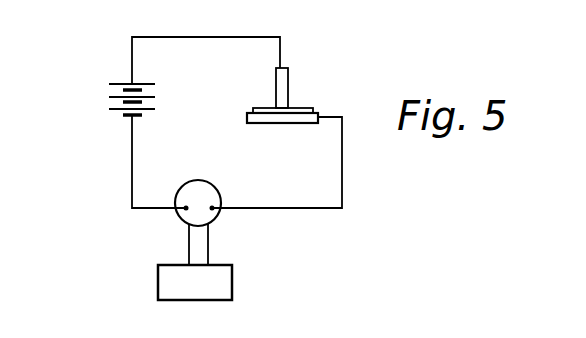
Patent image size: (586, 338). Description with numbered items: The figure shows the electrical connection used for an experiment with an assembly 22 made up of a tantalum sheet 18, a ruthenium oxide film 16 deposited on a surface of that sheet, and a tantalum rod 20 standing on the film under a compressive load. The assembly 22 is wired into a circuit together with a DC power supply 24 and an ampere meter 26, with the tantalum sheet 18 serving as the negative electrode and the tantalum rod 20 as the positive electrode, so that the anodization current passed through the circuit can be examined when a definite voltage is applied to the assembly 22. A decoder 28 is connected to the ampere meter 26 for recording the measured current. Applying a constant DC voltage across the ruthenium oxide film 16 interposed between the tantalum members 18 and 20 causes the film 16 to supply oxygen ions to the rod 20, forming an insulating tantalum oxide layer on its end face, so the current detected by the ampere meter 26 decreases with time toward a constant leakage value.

The ruthenium oxide film 16 is at (262, 109).
The tantalum sheet 18 is at (300, 125).
The tantalum rod 20 is at (288, 80).
The assembly 22 is at (300, 111).
The DC power supply 24 is at (112, 92).
The ampere meter 26 is at (197, 180).
The decoder 28 is at (236, 277).